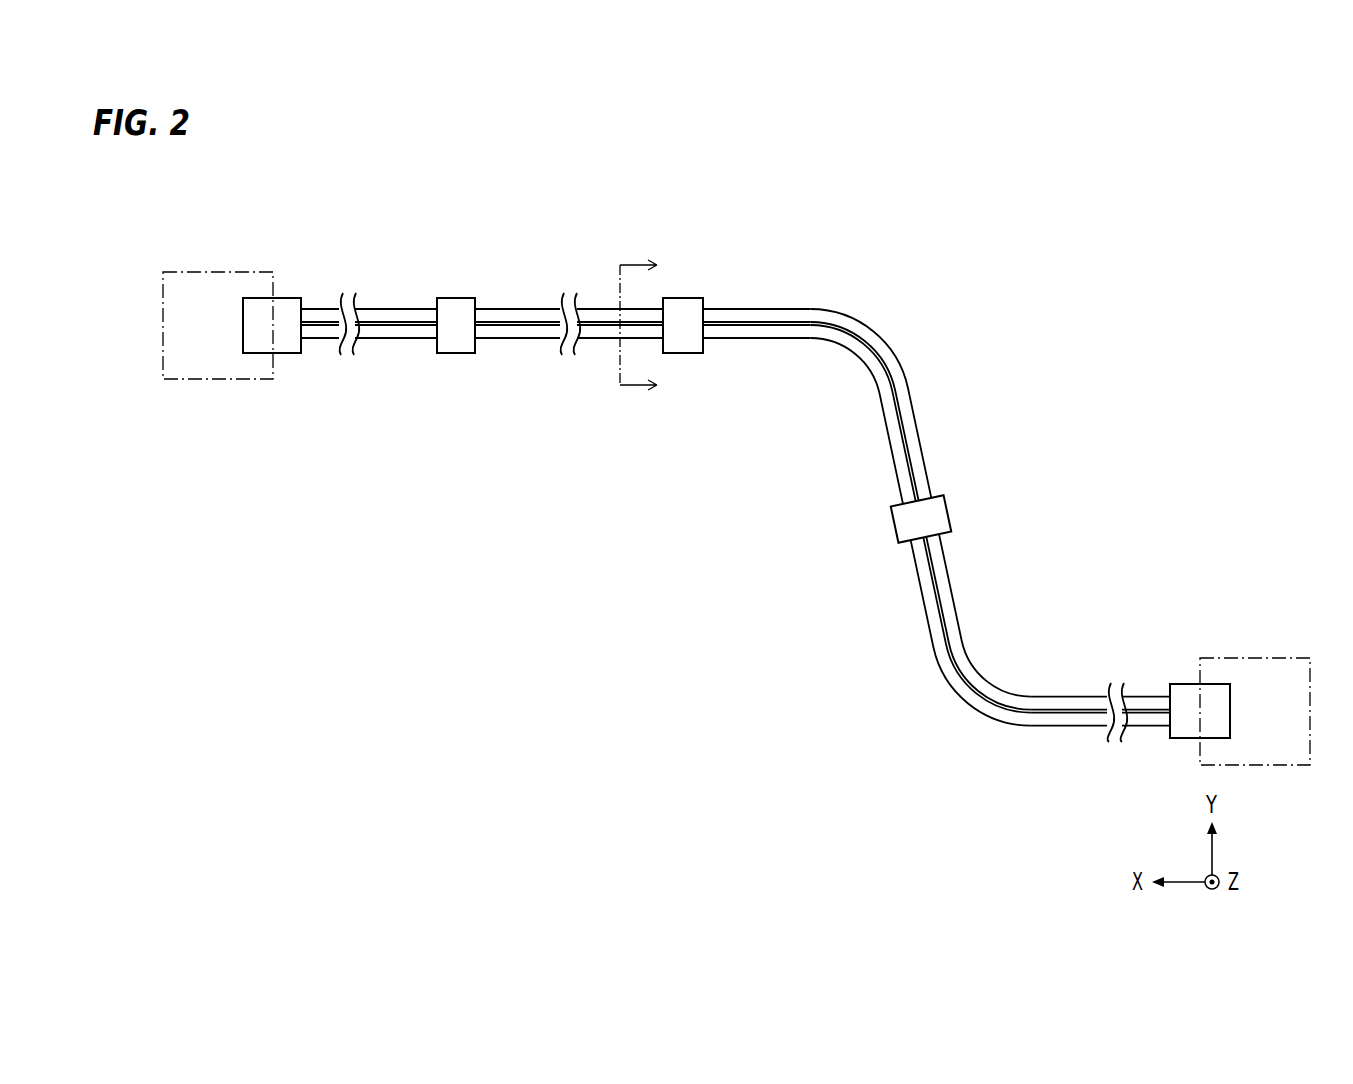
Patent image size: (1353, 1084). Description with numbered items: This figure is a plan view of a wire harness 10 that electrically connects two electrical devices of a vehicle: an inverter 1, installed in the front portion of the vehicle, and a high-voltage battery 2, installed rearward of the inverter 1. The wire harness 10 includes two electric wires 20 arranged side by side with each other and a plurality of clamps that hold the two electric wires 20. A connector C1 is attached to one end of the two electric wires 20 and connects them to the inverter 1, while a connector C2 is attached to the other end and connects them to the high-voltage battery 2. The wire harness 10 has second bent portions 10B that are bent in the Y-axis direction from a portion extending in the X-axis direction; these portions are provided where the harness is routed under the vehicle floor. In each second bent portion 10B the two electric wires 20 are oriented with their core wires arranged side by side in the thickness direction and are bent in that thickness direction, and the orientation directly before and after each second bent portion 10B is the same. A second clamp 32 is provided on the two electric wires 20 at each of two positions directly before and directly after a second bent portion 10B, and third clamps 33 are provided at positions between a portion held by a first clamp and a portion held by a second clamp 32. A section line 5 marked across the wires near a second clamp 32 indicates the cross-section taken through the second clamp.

The inverter 1 is at (217, 272).
The high-voltage battery 2 is at (1253, 658).
The section line V-V 5 is at (647, 325).
The wire harness 10 is at (1037, 368).
The second bent portion 10B is at (876, 337).
The electric wire 20 is at (952, 404).
The second clamp 32 is at (686, 298).
The third clamp 33 is at (458, 298).
The connector C1 is at (286, 298).
The connector C2 is at (1181, 684).